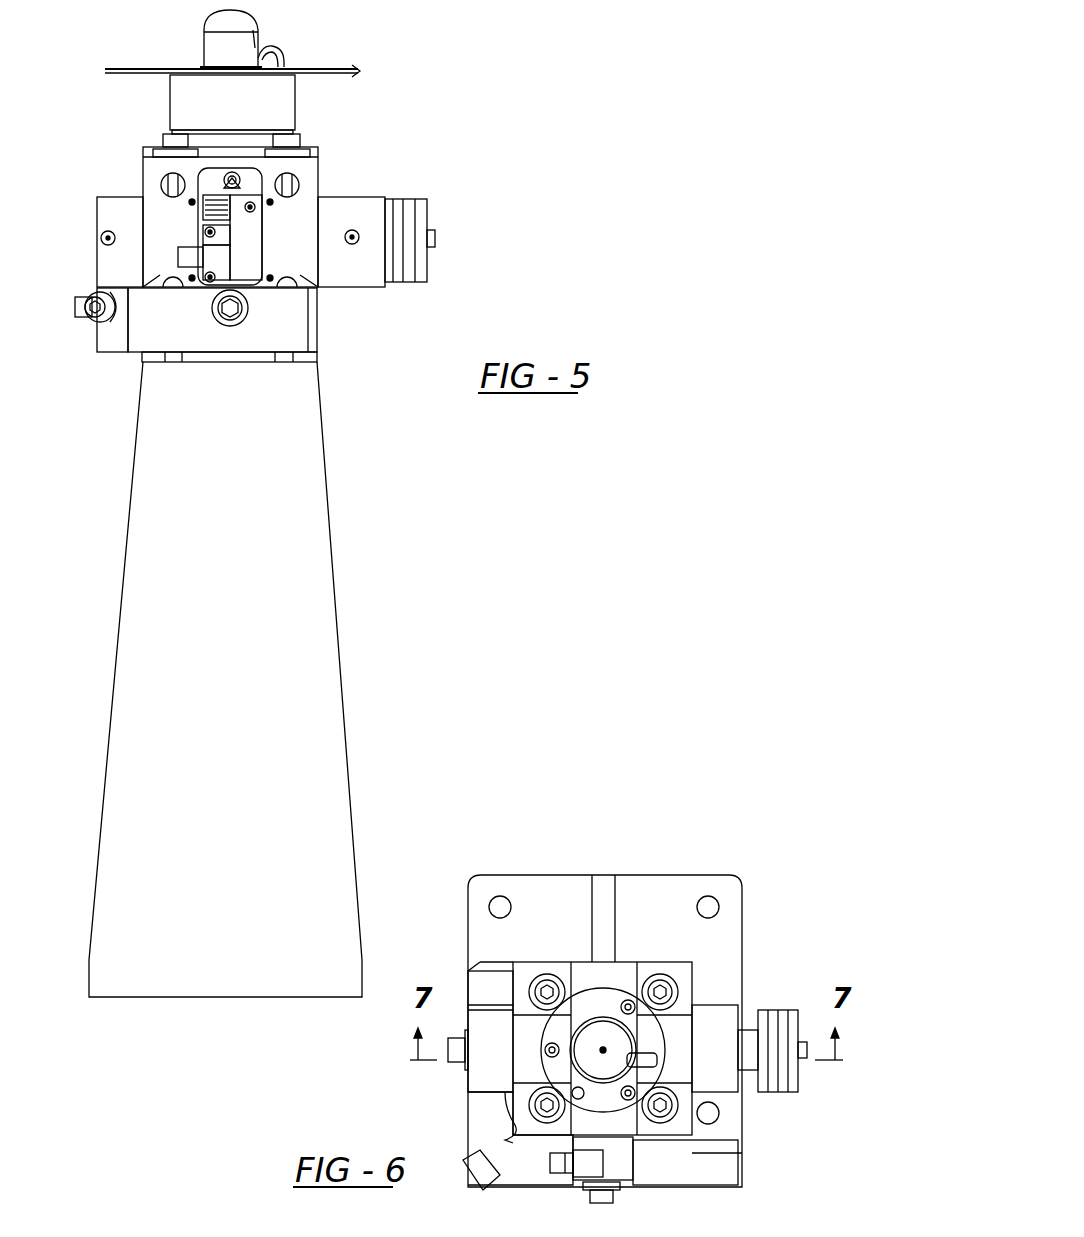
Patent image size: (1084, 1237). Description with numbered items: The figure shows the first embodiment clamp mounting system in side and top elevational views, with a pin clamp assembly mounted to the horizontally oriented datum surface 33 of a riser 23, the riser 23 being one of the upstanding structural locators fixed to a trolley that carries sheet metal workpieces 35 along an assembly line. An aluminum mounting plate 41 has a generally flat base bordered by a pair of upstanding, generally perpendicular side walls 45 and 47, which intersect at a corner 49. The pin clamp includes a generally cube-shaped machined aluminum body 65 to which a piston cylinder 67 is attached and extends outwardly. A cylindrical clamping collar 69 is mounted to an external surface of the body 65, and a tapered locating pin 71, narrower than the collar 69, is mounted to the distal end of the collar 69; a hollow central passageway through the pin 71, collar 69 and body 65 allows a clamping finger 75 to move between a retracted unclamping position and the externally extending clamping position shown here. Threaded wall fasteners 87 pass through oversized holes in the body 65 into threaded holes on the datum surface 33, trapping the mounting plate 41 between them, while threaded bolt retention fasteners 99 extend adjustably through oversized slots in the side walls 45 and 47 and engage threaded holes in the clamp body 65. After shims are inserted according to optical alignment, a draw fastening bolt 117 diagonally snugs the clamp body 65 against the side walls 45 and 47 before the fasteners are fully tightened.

In FIG. 5, the riser 23 is at (200, 548).
In FIG. 6, the datum surface 33 is at (648, 887).
In FIG. 5, the workpiece 35 is at (142, 70).
In FIG. 5, the mounting plate 41 is at (292, 323).
In FIG. 6, the mounting plate 41 is at (523, 1170).
In FIG. 6, the side wall 45 is at (668, 1163).
In FIG. 6, the side wall 47 is at (487, 989).
In FIG. 5, the corner 49 is at (112, 345).
In FIG. 5, the body 65 is at (313, 170).
In FIG. 6, the body 65 is at (623, 970).
In FIG. 5, the piston cylinder 67 is at (123, 205).
In FIG. 5, the clamping collar 69 is at (275, 102).
In FIG. 6, the clamping collar 69 is at (565, 1012).
In FIG. 5, the locating pin 71 is at (225, 50).
In FIG. 6, the locating pin 71 is at (595, 1032).
In FIG. 5, the clamping finger 75 is at (274, 52).
In FIG. 6, the clamping finger 75 is at (648, 1058).
In FIG. 6, the wall fastener 87 is at (660, 972).
In FIG. 6, the bolt retention fastener 99 is at (460, 1058).
In FIG. 6, the draw fastening bolt 117 is at (462, 1178).